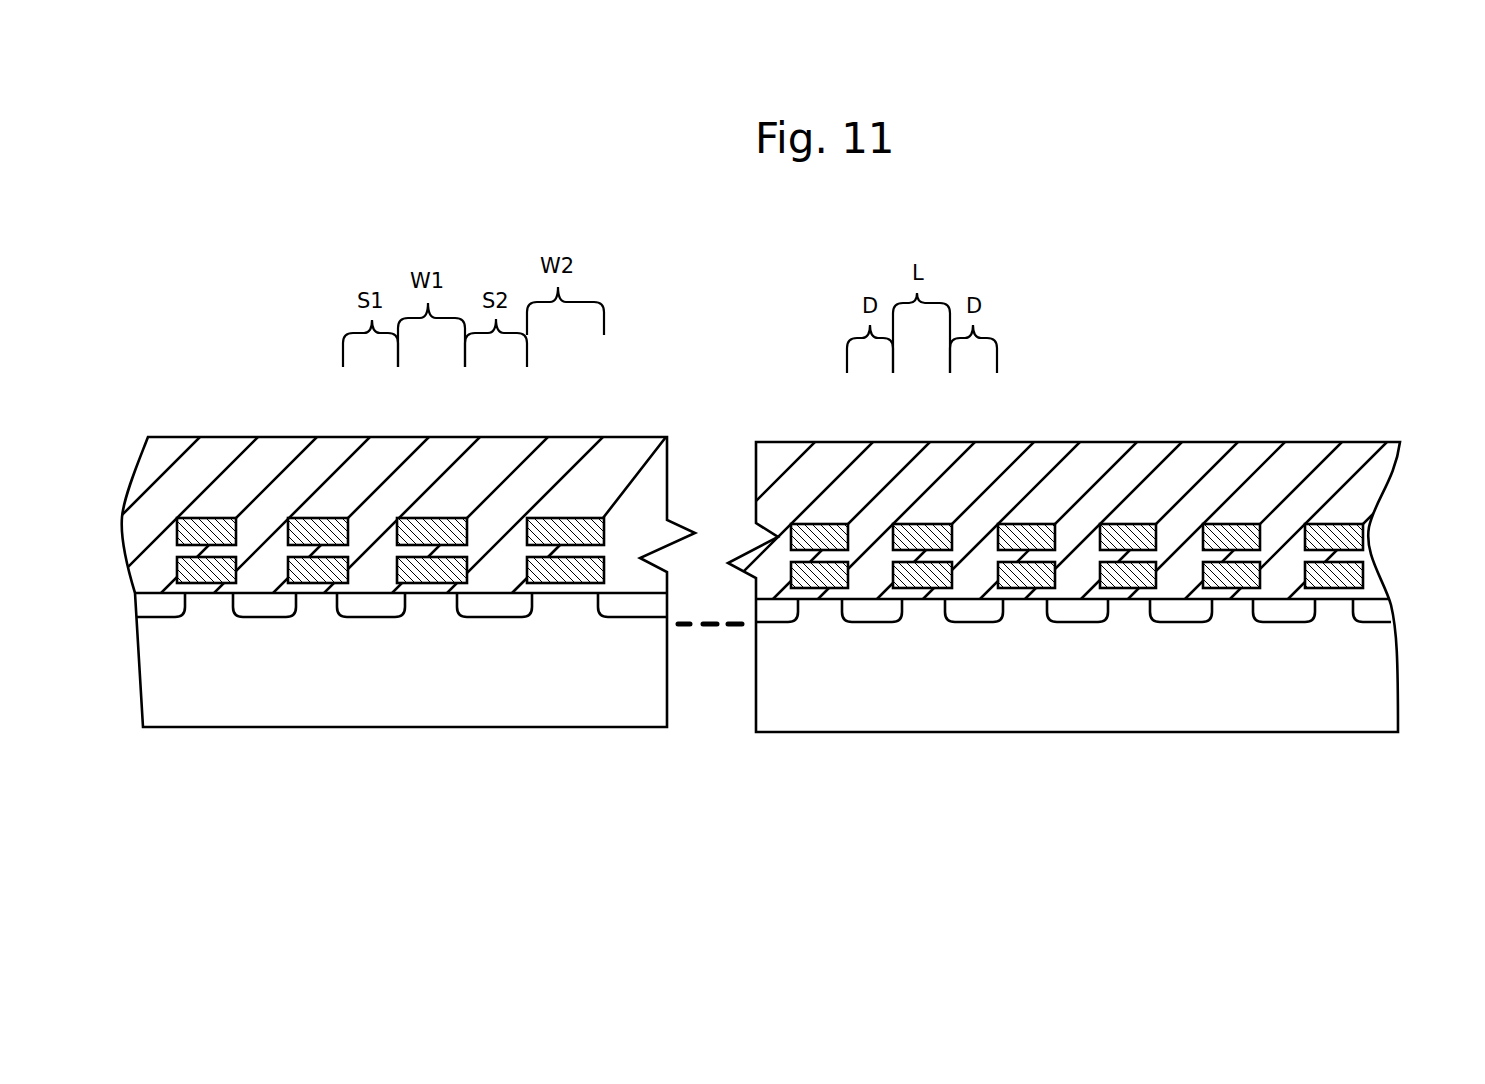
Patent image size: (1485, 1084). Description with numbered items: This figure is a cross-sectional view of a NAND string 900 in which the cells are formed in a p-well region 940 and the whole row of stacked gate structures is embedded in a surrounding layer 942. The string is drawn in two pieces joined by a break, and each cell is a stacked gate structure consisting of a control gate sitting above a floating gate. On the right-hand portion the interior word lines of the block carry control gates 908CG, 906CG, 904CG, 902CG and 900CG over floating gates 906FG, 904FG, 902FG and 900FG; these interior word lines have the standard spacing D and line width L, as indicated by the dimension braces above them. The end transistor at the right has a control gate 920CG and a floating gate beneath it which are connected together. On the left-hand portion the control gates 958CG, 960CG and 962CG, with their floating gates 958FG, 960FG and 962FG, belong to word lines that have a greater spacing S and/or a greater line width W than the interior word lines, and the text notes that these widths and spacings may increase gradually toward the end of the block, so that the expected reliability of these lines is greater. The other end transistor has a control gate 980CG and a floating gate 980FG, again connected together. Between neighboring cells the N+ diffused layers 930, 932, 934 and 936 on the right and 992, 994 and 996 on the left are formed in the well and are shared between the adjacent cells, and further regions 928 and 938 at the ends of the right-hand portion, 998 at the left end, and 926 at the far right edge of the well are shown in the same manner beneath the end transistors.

The NAND string 900 is at (333, 284).
The control gate 980CG is at (210, 518).
The control gate 962CG is at (320, 518).
The control gate 960CG is at (430, 518).
The control gate 958CG is at (575, 518).
The control gate 908CG is at (825, 524).
The control gate 906CG is at (925, 524).
The control gate 904CG is at (1030, 524).
The control gate 902CG is at (1132, 524).
The control gate 900CG is at (1235, 524).
The control gate 920CG is at (1338, 524).
The floating gate 980FG is at (208, 584).
The floating gate 962FG is at (320, 584).
The floating gate 960FG is at (432, 584).
The floating gate 958FG is at (567, 584).
The floating gate 906FG is at (920, 590).
The floating gate 904FG is at (1024, 590).
The floating gate 902FG is at (1127, 590).
The floating gate 900FG is at (1227, 590).
The dielectric layer 942 is at (1368, 495).
The p-well region 940 is at (1390, 714).
The source/drain region 926 is at (1388, 610).
The source/drain region 998 is at (165, 605).
The N+ diffused layer 992 is at (262, 605).
The N+ diffused layer 994 is at (375, 605).
The N+ diffused layer 996 is at (513, 605).
The source/drain region 928 is at (777, 610).
The N+ diffused layer 930 is at (877, 610).
The N+ diffused layer 932 is at (977, 610).
The N+ diffused layer 934 is at (1082, 610).
The N+ diffused layer 936 is at (1185, 610).
The source/drain region 938 is at (1287, 610).